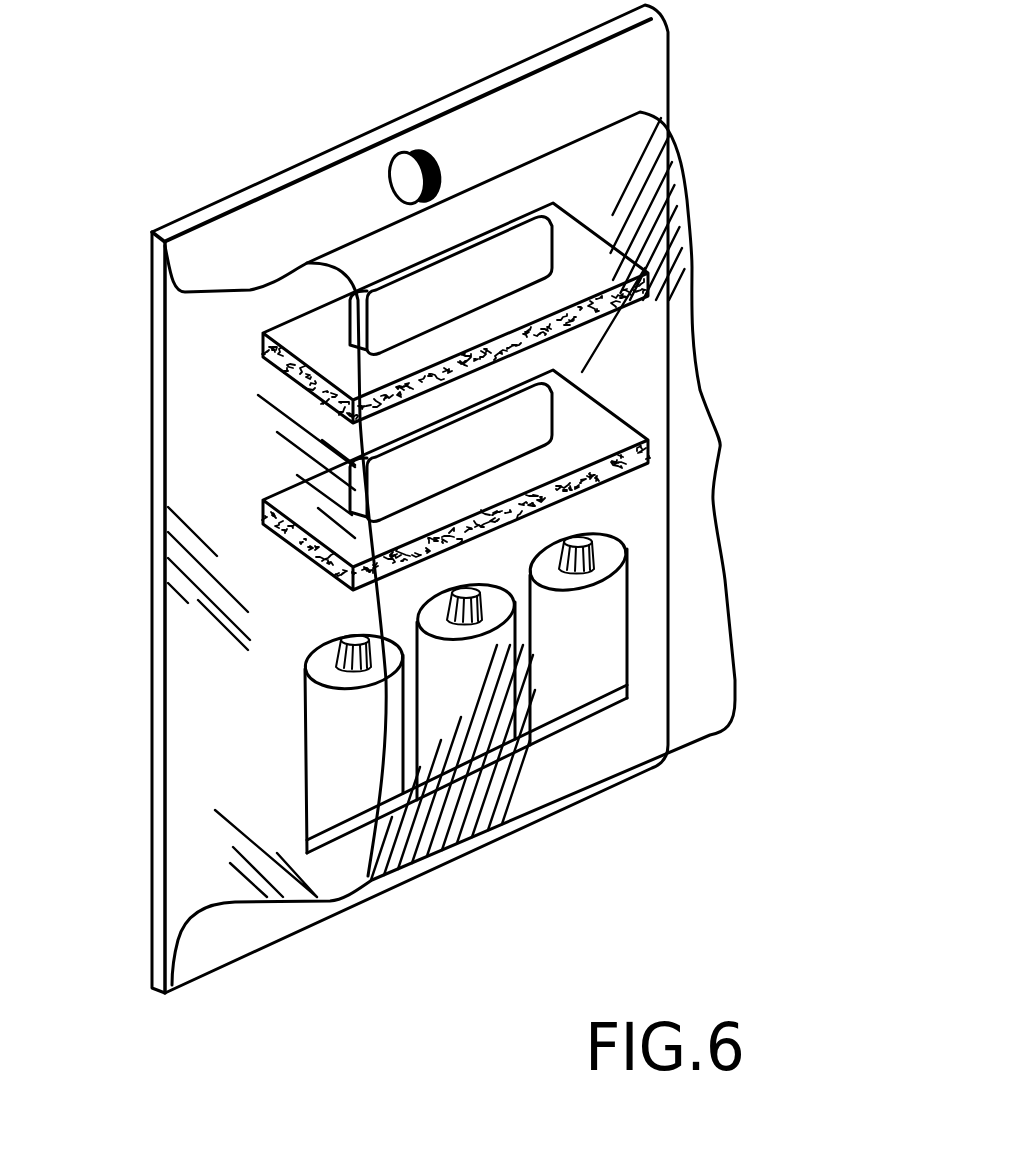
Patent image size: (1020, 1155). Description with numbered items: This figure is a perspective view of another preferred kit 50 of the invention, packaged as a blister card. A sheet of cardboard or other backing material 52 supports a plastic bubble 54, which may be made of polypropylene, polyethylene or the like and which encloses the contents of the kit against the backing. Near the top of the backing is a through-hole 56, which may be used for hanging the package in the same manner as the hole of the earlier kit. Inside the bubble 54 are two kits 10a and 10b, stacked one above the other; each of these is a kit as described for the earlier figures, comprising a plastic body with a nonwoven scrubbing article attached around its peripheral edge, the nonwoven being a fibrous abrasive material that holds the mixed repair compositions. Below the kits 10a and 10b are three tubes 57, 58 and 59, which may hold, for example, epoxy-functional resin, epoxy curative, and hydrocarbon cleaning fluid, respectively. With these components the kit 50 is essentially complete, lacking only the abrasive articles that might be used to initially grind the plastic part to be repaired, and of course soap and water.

The kit 10a is at (293, 324).
The kit 10b is at (297, 503).
The kit 50 is at (441, 499).
The backing material 52 is at (155, 653).
The plastic bubble 54 is at (643, 67).
The through-hole 56 is at (427, 178).
The tube 57 is at (345, 743).
The tube 58 is at (473, 740).
The tube 59 is at (600, 692).